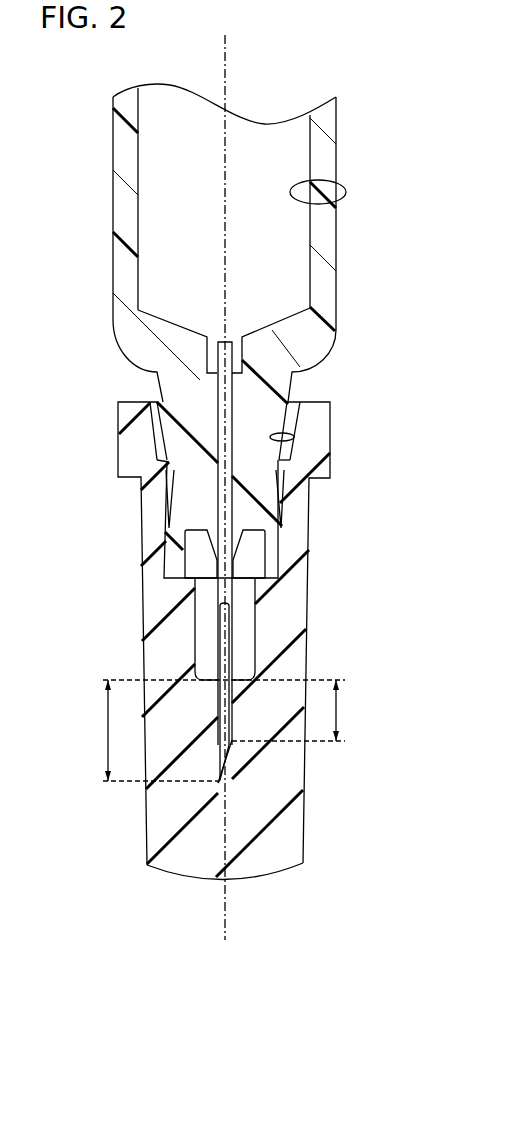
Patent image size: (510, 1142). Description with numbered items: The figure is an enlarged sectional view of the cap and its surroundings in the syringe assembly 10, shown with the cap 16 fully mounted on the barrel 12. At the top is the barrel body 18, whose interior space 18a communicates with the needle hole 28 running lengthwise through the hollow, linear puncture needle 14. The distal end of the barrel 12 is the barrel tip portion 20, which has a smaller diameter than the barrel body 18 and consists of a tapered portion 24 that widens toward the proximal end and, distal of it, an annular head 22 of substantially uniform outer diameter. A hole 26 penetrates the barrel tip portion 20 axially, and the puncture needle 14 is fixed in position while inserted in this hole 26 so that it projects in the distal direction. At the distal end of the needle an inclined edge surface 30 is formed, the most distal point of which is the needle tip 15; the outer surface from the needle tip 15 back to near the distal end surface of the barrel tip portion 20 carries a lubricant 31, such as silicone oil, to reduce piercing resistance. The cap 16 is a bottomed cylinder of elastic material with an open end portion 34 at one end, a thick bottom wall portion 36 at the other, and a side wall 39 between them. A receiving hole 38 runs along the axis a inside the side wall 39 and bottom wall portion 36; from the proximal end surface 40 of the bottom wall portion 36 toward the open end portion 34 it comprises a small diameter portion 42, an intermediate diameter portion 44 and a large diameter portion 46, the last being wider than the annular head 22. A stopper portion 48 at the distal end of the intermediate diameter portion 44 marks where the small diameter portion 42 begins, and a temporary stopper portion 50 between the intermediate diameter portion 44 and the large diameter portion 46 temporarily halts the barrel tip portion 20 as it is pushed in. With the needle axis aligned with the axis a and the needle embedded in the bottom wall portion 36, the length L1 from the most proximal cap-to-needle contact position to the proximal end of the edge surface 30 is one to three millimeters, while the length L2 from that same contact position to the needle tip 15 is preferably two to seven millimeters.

The syringe assembly 10 is at (395, 66).
The barrel 12 is at (403, 247).
The puncture needle 14 is at (210, 477).
The needle tip 15 is at (218, 783).
The cap 16 is at (362, 604).
The barrel body 18 is at (337, 284).
The interior space 18a is at (337, 186).
The barrel tip portion 20 is at (52, 477).
The annular head 22 is at (165, 548).
The tapered portion 24 is at (148, 489).
The hole 26 is at (230, 433).
The needle hole 28 is at (233, 634).
The edge surface 30 is at (229, 752).
The lubricant 31 is at (217, 651).
The open end portion 34 is at (166, 417).
The bottom wall portion 36 is at (283, 770).
The receiving hole 38 is at (397, 452).
The side wall 39 is at (142, 617).
The proximal end surface 40 is at (255, 676).
The small diameter portion 42 is at (244, 600).
The intermediate diameter portion 44 is at (282, 518).
The large diameter portion 46 is at (270, 458).
The stopper portion 48 is at (150, 560).
The temporary stopper portion 50 is at (178, 438).
The insertion length to the proximal end of the edge surface L1 is at (236, 710).
The insertion length to the distal end of the edge surface L2 is at (147, 730).
The axis a is at (228, 920).